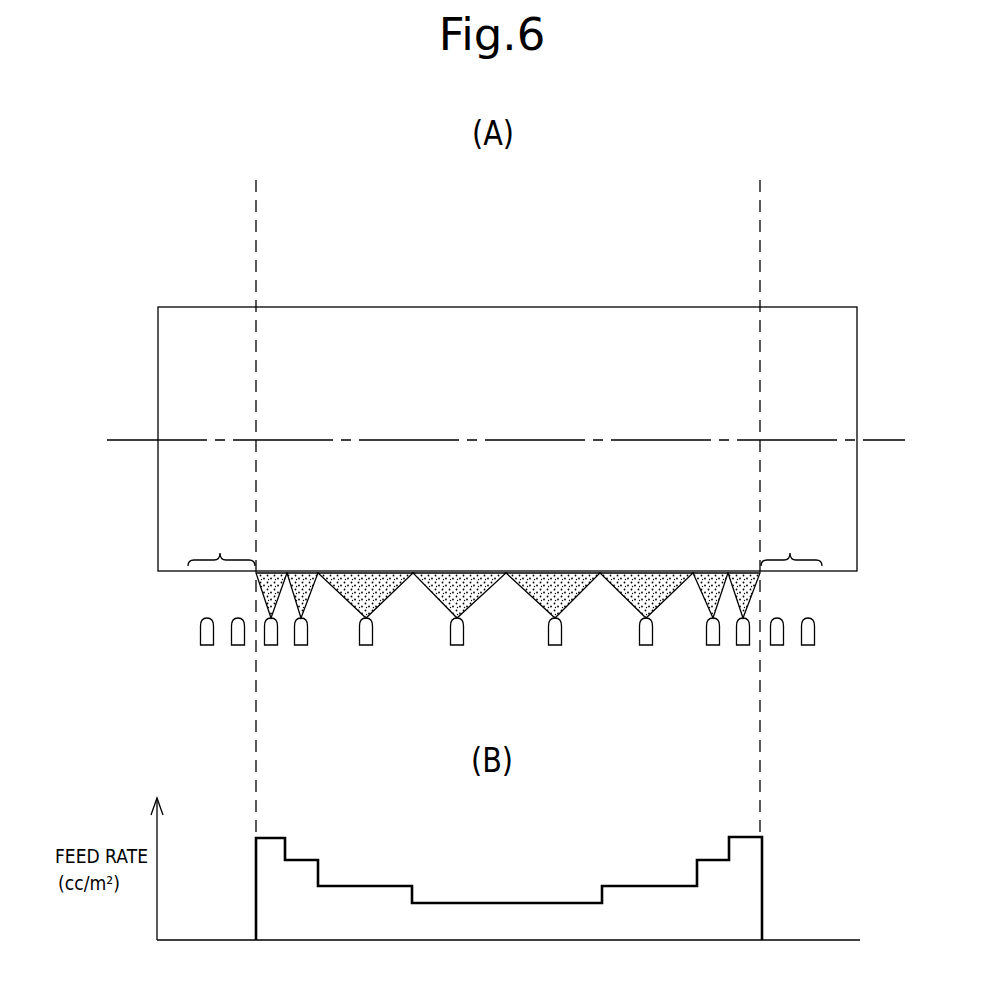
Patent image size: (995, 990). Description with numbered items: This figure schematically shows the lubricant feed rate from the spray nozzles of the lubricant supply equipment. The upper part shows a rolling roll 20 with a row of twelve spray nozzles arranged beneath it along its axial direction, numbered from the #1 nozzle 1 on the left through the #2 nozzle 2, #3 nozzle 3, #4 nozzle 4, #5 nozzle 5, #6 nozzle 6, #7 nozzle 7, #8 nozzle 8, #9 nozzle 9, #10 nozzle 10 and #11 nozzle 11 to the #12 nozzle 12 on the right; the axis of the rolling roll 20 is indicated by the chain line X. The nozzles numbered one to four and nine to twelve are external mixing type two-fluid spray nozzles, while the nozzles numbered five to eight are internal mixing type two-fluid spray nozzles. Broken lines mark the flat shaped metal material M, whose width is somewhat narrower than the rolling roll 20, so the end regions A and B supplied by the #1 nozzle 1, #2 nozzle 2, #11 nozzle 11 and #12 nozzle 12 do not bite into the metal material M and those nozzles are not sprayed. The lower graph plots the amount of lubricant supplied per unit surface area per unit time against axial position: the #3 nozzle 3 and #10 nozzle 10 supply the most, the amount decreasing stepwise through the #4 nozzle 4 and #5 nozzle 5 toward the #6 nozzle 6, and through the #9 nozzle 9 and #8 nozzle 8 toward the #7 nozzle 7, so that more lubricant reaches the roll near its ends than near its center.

The #1 nozzle 1 is at (207, 645).
The #2 nozzle 2 is at (238, 645).
The #3 nozzle 3 is at (271, 645).
The #4 nozzle 4 is at (301, 645).
The #5 nozzle 5 is at (366, 645).
The #6 nozzle 6 is at (457, 645).
The #7 nozzle 7 is at (555, 645).
The #8 nozzle 8 is at (646, 645).
The #9 nozzle 9 is at (713, 645).
The #10 nozzle 10 is at (743, 645).
The #11 nozzle 11 is at (777, 645).
The #12 nozzle 12 is at (808, 645).
The rolling roll 20 is at (857, 335).
The metal material M is at (761, 218).
The center axis X is at (890, 440).
The region A is at (221, 546).
The region B is at (791, 546).